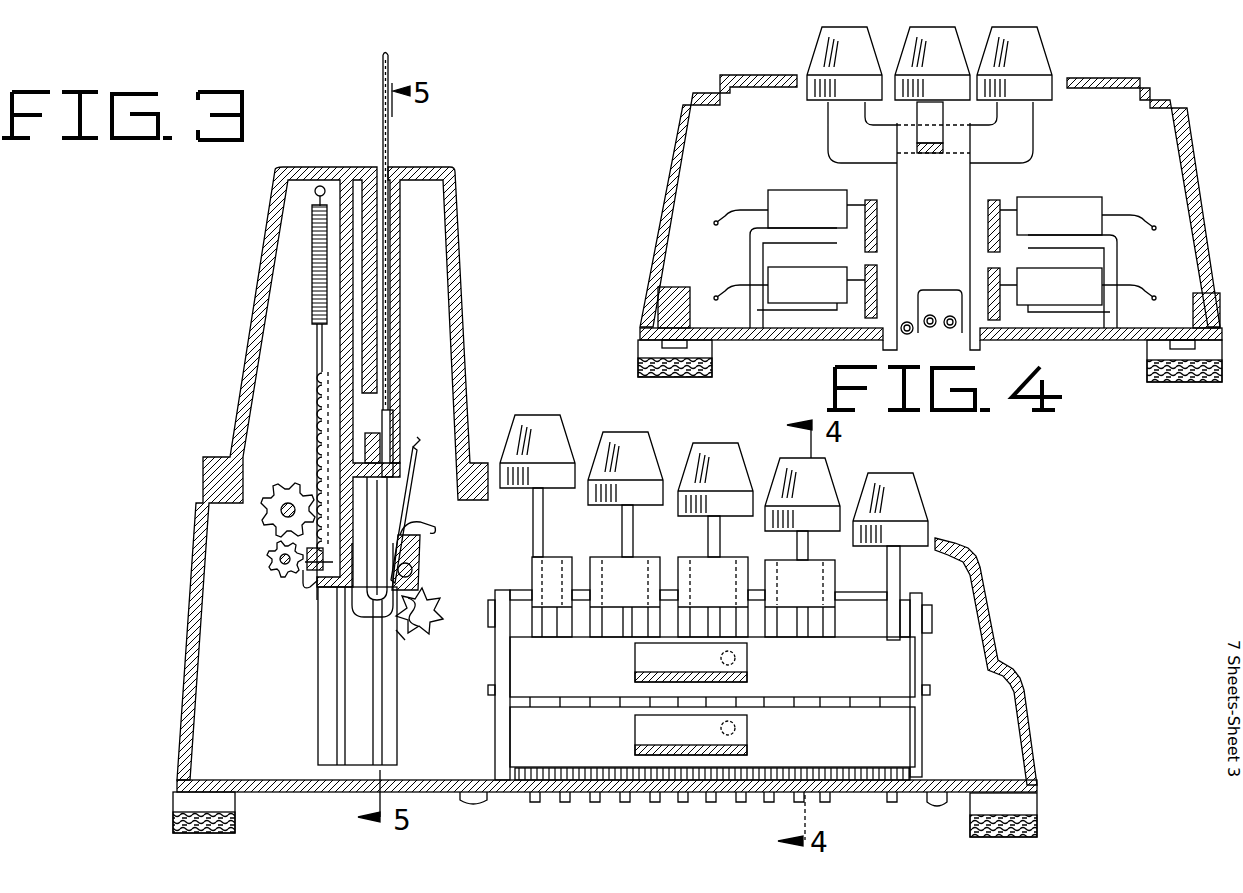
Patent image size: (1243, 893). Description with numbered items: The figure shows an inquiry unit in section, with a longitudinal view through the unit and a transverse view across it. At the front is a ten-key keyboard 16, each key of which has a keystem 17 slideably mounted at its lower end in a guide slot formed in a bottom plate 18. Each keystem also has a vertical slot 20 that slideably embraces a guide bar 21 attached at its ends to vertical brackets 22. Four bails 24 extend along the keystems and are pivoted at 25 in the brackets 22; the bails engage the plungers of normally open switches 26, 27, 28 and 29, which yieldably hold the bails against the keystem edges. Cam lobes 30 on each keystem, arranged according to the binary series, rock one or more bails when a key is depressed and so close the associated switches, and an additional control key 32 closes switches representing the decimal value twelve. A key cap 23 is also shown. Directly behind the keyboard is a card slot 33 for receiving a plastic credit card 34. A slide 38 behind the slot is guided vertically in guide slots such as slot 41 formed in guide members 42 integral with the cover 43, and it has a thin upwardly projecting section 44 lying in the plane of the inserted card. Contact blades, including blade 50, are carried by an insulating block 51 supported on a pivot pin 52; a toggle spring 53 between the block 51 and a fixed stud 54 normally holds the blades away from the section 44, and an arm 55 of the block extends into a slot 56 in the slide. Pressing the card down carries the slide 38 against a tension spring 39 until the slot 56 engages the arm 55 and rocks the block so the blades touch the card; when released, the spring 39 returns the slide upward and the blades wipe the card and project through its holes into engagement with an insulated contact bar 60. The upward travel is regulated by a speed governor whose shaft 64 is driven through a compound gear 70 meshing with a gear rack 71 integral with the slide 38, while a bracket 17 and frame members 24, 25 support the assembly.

In FIG. 3, the ten-key keyboard 16 is at (707, 443).
In FIG. 3, the keystem 17 is at (900, 573).
In FIG. 3, the bottom plate 18 is at (758, 795).
In FIG. 4, the vertical slot 20 is at (950, 127).
In FIG. 3, the guide bar 21 is at (877, 592).
In FIG. 4, the guide bar 21 is at (917, 147).
In FIG. 3, the vertical brackets 22 is at (922, 662).
In FIG. 3, the key cap 23 is at (792, 458).
In FIG. 3, the bails 24 is at (532, 688).
In FIG. 3, the pivot 25 is at (927, 688).
In FIG. 4, the switch 26 is at (777, 193).
In FIG. 4, the switch 27 is at (775, 275).
In FIG. 4, the switch 28 is at (1077, 198).
In FIG. 4, the switch 29 is at (1087, 275).
In FIG. 4, the cam lobes 30 is at (860, 203).
In FIG. 3, the control key 32 is at (538, 415).
In FIG. 3, the card slot 33 is at (393, 167).
In FIG. 3, the credit card 34 is at (390, 67).
In FIG. 3, the slide 38 is at (343, 342).
In FIG. 3, the tension spring 39 is at (310, 290).
In FIG. 3, the guide slot 41 is at (337, 642).
In FIG. 3, the guide members 42 is at (320, 683).
In FIG. 3, the cover 43 is at (985, 585).
In FIG. 3, the upwardly projecting section 44 is at (392, 393).
In FIG. 3, the contact blade 50 is at (413, 480).
In FIG. 3, the block 51 is at (420, 550).
In FIG. 3, the pivot pin 52 is at (410, 572).
In FIG. 3, the toggle spring 53 is at (425, 620).
In FIG. 3, the fixed stud 54 is at (417, 643).
In FIG. 3, the arm 55 is at (363, 605).
In FIG. 3, the slot 56 is at (340, 390).
In FIG. 3, the contact bar 60 is at (387, 433).
In FIG. 3, the rotatable shaft 64 is at (283, 557).
In FIG. 3, the compound gear 70 is at (280, 477).
In FIG. 3, the gear rack 71 is at (310, 410).